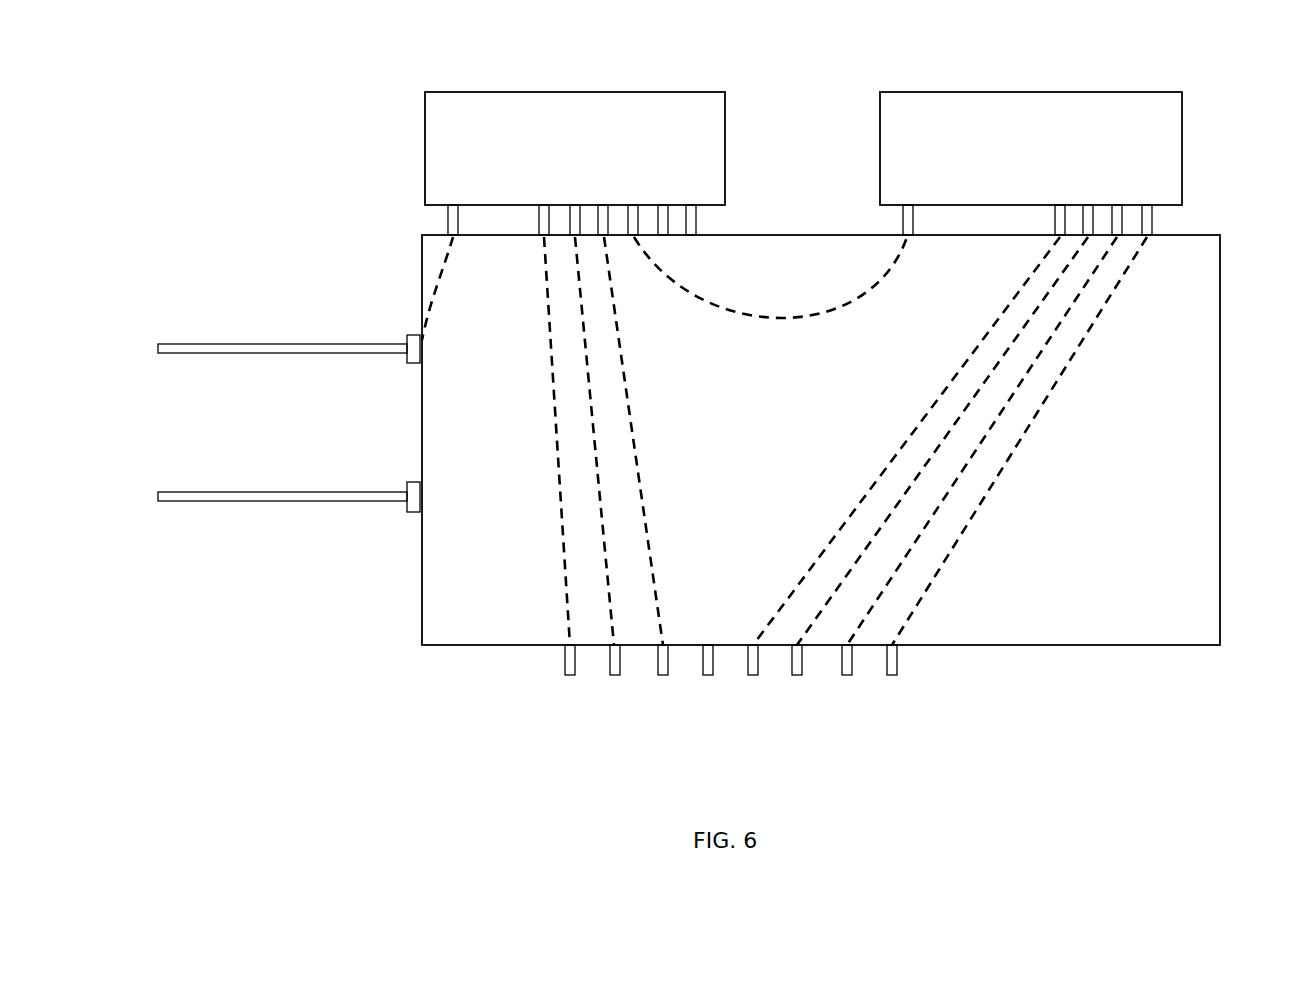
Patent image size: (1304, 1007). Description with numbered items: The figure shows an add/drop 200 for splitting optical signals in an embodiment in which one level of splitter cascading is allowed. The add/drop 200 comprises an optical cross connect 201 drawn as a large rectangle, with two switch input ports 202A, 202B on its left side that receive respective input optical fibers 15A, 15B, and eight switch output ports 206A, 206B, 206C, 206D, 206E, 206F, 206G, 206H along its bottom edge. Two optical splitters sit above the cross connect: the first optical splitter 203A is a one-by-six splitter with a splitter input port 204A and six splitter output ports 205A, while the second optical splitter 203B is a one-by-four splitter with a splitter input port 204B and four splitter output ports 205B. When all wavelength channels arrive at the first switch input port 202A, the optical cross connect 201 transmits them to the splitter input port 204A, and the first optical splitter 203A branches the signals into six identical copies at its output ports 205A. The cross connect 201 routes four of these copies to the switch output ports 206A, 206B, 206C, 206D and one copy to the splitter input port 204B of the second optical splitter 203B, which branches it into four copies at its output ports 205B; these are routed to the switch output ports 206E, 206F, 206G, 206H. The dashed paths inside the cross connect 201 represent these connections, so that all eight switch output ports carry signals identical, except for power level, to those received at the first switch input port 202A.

The input optical fiber 15A is at (224, 348).
The input optical fiber 15B is at (228, 492).
The add/drop 200 is at (1211, 662).
The optical cross connect 201 is at (997, 645).
The switch input port 202A is at (412, 345).
The switch input port 202B is at (407, 507).
The first optical splitter 203A is at (725, 115).
The second optical splitter 203B is at (1182, 115).
The splitter input port 204A is at (450, 226).
The splitter input port 204B is at (905, 226).
The splitter output ports 205A is at (706, 212).
The splitter output ports 205B is at (1163, 223).
The switch output port 206A is at (562, 665).
The switch output port 206B is at (608, 665).
The switch output port 206C is at (655, 665).
The switch output port 206D is at (700, 665).
The switch output port 206E is at (745, 665).
The switch output port 206F is at (790, 665).
The switch output port 206G is at (840, 665).
The switch output port 206H is at (885, 665).